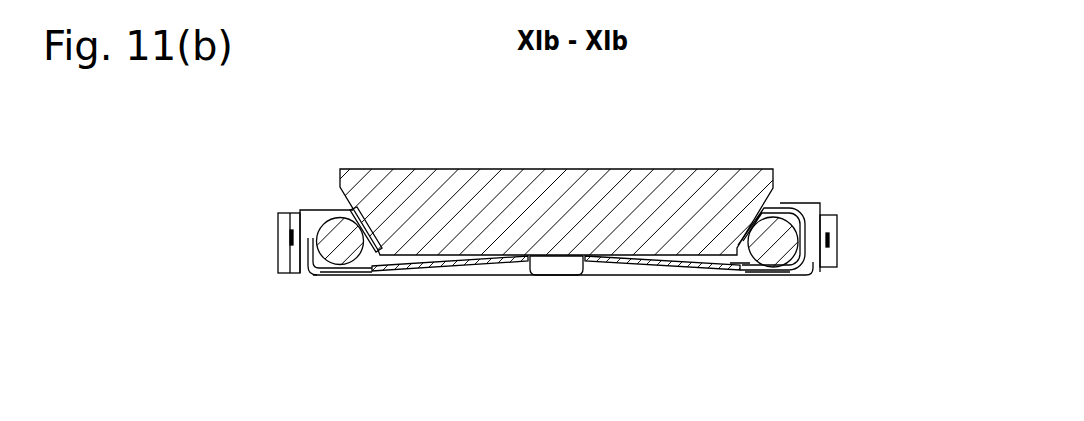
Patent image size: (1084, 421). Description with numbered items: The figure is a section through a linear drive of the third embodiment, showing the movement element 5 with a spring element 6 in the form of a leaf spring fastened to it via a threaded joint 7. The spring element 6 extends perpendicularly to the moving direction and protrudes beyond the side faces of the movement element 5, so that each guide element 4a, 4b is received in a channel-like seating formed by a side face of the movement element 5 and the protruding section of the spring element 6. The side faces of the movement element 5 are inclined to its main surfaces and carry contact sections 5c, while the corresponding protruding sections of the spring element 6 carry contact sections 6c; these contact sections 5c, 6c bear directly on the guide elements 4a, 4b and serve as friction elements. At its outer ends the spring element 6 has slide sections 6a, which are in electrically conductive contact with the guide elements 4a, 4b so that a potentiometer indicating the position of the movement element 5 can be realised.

The movement element 5 is at (542, 214).
The contact section 5c is at (345, 216).
The guide element 4a is at (336, 250).
The guide element 4b is at (768, 268).
The spring element 6 is at (606, 262).
The slide section 6a is at (312, 276).
The contact section 6c is at (362, 268).
The threaded joint 7 is at (557, 268).